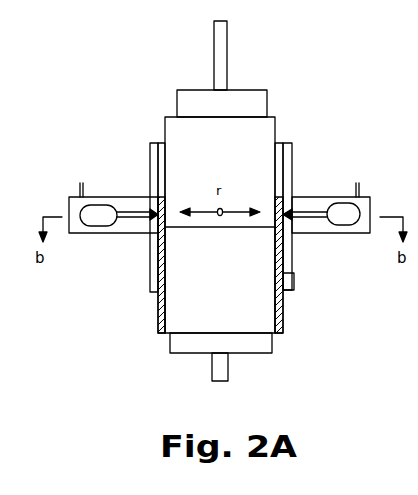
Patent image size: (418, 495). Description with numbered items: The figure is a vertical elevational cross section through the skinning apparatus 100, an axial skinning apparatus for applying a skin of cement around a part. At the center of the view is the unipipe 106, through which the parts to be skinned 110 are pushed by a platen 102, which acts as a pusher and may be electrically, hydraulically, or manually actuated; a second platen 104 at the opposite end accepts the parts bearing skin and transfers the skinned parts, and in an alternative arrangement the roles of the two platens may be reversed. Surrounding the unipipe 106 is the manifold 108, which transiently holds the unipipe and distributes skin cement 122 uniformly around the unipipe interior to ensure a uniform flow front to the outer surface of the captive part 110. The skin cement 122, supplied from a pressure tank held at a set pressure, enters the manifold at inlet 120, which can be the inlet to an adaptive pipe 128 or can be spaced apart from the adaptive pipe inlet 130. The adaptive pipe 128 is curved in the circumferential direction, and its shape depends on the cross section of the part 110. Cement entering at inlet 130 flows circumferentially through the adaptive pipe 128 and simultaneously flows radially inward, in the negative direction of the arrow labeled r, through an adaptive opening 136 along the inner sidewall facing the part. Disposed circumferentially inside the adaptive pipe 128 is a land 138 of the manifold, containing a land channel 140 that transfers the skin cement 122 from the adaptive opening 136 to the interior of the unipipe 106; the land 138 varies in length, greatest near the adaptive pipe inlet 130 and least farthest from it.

The skinning apparatus 100 is at (413, 99).
The platen 102 is at (245, 101).
The platen 104 is at (249, 358).
The unipipe 106 is at (287, 165).
The manifold 108 is at (362, 230).
The part to be skinned 110 is at (280, 315).
The inlet 120 is at (358, 185).
The skin cement 122 is at (294, 280).
The adaptive pipe 128 is at (101, 232).
The adaptive pipe inlet 130 is at (77, 234).
The adaptive opening 136 is at (330, 212).
The land 138 is at (147, 189).
The land channel 140 is at (312, 233).